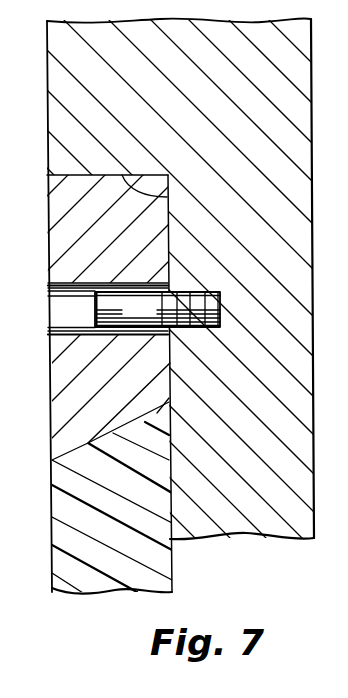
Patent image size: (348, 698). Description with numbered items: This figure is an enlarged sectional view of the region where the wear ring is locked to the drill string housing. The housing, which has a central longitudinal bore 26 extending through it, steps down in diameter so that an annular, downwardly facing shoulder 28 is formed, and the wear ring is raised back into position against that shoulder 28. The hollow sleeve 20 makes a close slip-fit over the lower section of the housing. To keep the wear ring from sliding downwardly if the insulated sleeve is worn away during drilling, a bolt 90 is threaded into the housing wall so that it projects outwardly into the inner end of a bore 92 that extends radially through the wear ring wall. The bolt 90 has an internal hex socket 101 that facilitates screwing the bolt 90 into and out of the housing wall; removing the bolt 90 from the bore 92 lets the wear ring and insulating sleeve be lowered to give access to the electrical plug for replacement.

The sleeve 20 is at (52, 464).
The central longitudinal bore 26 is at (47, 125).
The shoulder 28 is at (167, 197).
The bolt 90 is at (93, 296).
The bore 92 is at (63, 335).
The internal hex socket 101 is at (108, 304).